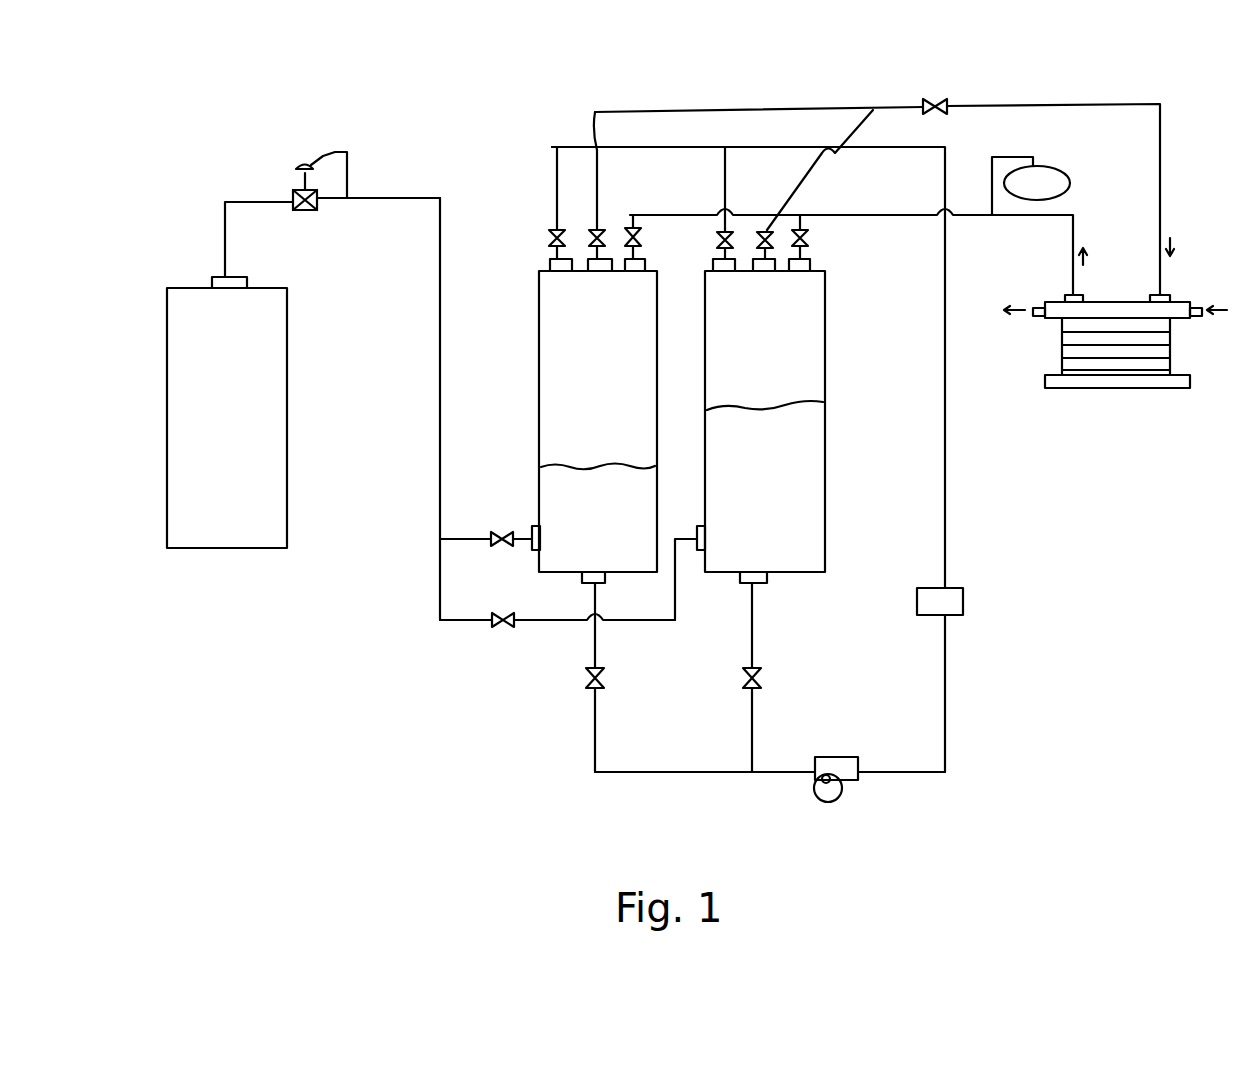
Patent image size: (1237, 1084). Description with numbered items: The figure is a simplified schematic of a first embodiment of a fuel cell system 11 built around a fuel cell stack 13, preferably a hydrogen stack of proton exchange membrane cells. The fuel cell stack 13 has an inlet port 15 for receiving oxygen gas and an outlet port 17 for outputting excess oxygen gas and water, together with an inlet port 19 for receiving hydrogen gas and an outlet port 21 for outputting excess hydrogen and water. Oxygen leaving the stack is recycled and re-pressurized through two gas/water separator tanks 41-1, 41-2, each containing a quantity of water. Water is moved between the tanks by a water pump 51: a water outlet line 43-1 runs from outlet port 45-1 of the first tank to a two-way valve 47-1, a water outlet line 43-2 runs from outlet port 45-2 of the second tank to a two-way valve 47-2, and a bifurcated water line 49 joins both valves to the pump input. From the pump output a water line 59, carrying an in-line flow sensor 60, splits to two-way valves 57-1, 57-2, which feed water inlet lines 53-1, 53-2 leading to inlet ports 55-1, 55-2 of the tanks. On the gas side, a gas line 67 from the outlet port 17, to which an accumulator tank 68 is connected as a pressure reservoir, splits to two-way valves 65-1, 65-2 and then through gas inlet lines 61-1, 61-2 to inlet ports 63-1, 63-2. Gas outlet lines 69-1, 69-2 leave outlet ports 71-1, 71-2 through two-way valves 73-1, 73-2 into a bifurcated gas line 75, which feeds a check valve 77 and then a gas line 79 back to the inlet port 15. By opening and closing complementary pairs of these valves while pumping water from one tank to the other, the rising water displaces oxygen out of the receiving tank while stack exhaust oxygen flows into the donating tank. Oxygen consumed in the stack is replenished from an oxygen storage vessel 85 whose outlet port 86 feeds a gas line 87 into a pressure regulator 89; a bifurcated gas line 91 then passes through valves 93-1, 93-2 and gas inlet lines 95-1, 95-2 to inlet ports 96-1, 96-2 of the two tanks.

The fuel cell system 11 is at (428, 716).
The fuel cell stack 13 is at (1133, 395).
The inlet port 15 is at (1168, 297).
The outlet port 17 is at (1083, 297).
The inlet port 19 is at (1200, 318).
The outlet port 21 is at (1040, 320).
The gas/water separator tank 41-1 is at (539, 410).
The gas/water separator tank 41-2 is at (705, 400).
The water outlet line 43-1 is at (595, 641).
The water outlet line 43-2 is at (752, 641).
The outlet port 45-1 is at (603, 583).
The outlet port 45-2 is at (768, 583).
The two-way valve 47-1 is at (586, 678).
The two-way valve 47-2 is at (743, 678).
The water line 49 is at (770, 775).
The water pump 51 is at (840, 760).
The water inlet line 53-1 is at (548, 258).
The water inlet line 53-2 is at (716, 255).
The inlet port 55-1 is at (564, 280).
The inlet port 55-2 is at (728, 280).
The two-way valve 57-1 is at (548, 233).
The two-way valve 57-2 is at (716, 236).
The water line 59 is at (885, 150).
The flow sensor 60 is at (950, 605).
The gas inlet line 61-1 is at (626, 255).
The gas inlet line 61-2 is at (805, 250).
The inlet port 63-1 is at (640, 280).
The inlet port 63-2 is at (806, 281).
The two-way valve 65-1 is at (645, 235).
The two-way valve 65-2 is at (808, 243).
The gas line 67 is at (893, 218).
The accumulator tank 68 is at (1068, 180).
The gas outlet line 69-1 is at (590, 256).
The gas outlet line 69-2 is at (755, 258).
The outlet port 71-1 is at (605, 280).
The outlet port 71-2 is at (768, 284).
The two-way valve 73-1 is at (603, 222).
The two-way valve 73-2 is at (760, 228).
The gas line 75 is at (890, 106).
The check valve 77 is at (936, 103).
The gas line 79 is at (1105, 103).
The oxygen storage vessel 85 is at (237, 534).
The outlet port 86 is at (247, 283).
The gas line 87 is at (237, 198).
The pressure regulator 89 is at (352, 170).
The gas line 91 is at (440, 340).
The valve 93-1 is at (500, 530).
The valve 93-2 is at (500, 618).
The gas inlet line 95-1 is at (527, 536).
The gas inlet line 95-2 is at (675, 604).
The inlet port 96-1 is at (530, 546).
The inlet port 96-2 is at (698, 525).